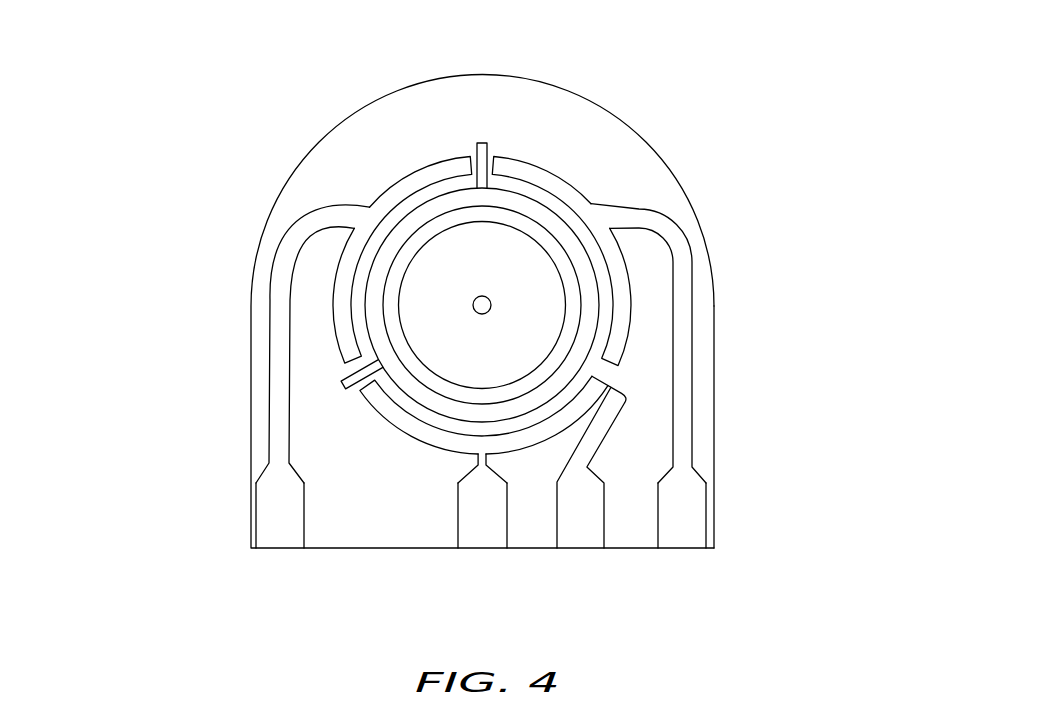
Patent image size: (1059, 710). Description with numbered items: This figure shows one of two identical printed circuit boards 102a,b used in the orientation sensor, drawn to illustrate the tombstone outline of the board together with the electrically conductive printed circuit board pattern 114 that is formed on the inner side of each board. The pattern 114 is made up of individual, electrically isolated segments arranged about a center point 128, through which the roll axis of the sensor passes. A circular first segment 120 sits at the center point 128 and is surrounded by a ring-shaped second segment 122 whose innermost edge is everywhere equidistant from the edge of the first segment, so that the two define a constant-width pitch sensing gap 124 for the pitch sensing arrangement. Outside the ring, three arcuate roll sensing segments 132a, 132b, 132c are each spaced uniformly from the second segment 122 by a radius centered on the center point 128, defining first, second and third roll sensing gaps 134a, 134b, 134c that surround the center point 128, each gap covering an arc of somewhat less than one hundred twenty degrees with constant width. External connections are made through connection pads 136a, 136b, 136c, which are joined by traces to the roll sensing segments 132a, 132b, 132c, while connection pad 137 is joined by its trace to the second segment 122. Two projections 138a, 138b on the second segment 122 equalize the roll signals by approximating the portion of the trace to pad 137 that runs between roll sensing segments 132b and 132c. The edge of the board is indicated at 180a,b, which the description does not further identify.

The printed circuit boards 102a,b is at (637, 126).
The printed circuit board pattern 114 is at (530, 158).
The first segment 120 is at (506, 272).
The second segment 122 is at (413, 208).
The pitch sensing gap 124 is at (390, 307).
The center point 128 is at (491, 305).
The first roll sensing segment 132a is at (368, 206).
The second roll sensing segment 132b is at (592, 204).
The third roll sensing segment 132c is at (380, 417).
The first roll sensing gap 134a is at (357, 285).
The second roll sensing gap 134b is at (548, 193).
The third roll sensing gap 134c is at (433, 418).
The connection pad 136a is at (287, 540).
The connection pad 136b is at (678, 522).
The connection pad 136c is at (482, 535).
The connection pad 137 is at (597, 438).
The projection 138a is at (340, 382).
The projection 138b is at (481, 143).
The side edge 180a,b is at (703, 398).